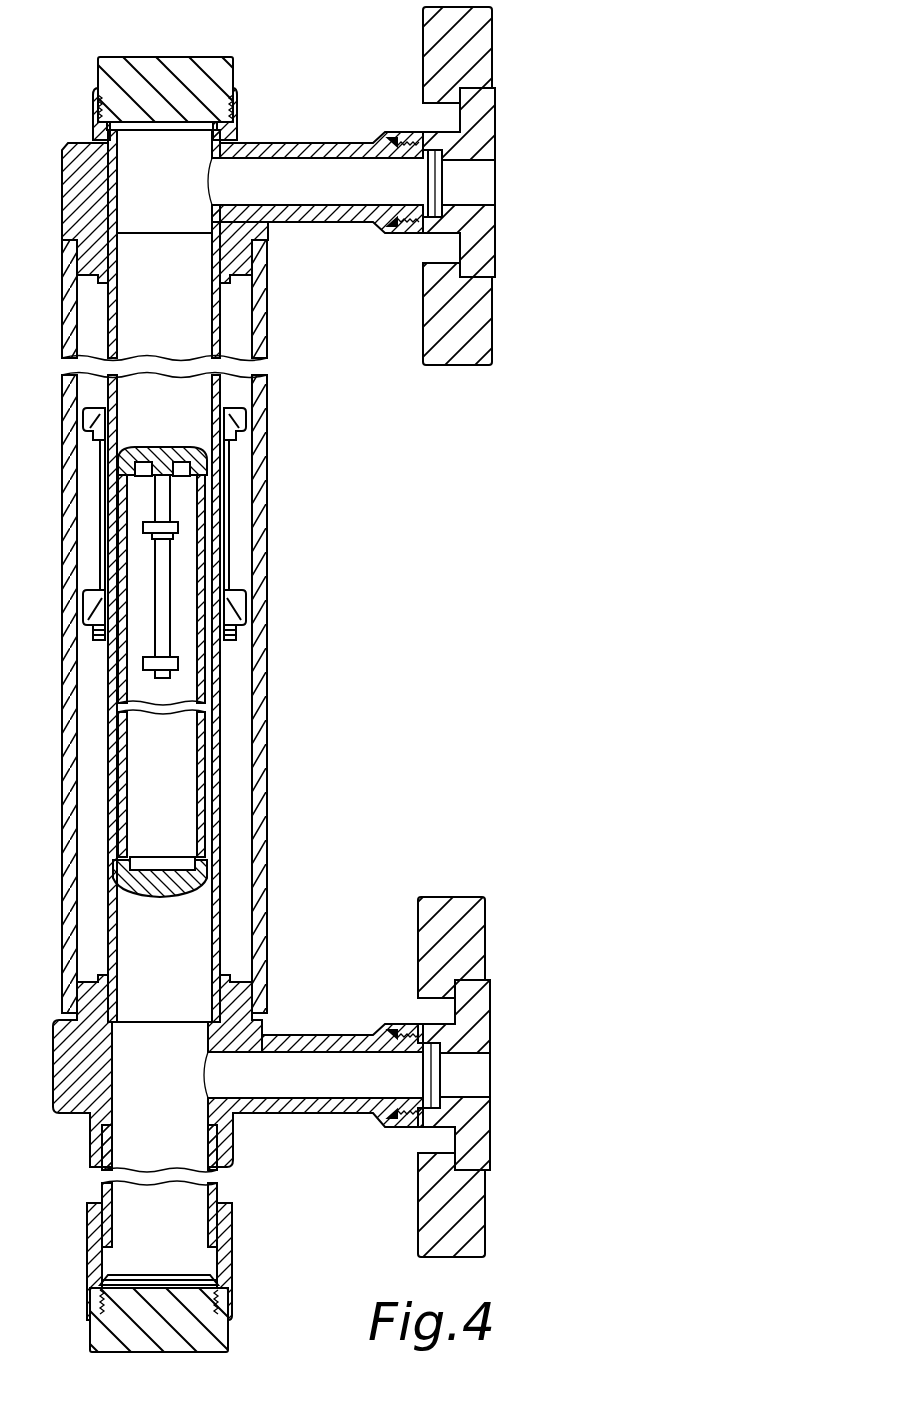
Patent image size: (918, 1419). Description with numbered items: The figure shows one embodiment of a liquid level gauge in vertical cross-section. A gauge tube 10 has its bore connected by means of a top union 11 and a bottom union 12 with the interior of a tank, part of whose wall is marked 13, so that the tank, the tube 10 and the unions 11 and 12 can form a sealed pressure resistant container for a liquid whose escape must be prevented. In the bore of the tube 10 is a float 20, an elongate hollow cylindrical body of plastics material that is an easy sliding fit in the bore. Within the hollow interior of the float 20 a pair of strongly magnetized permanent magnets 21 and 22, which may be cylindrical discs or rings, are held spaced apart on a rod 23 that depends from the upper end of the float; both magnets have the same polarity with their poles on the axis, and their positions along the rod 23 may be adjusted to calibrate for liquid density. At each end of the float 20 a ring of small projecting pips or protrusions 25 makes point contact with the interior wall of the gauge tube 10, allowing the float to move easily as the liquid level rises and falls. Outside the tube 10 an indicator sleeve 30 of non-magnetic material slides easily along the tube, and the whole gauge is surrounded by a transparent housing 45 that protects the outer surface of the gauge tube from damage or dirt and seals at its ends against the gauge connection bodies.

The gauge tube 10 is at (220, 393).
The top union 11 is at (285, 147).
The bottom union 12 is at (318, 1042).
The tank wall 13 is at (476, 930).
The float 20 is at (202, 791).
The magnet 21 is at (178, 526).
The magnet 22 is at (178, 664).
The rod 23 is at (168, 578).
The protrusions 25 is at (210, 468).
The indicator sleeve 30 is at (228, 503).
The transparent housing 45 is at (258, 731).